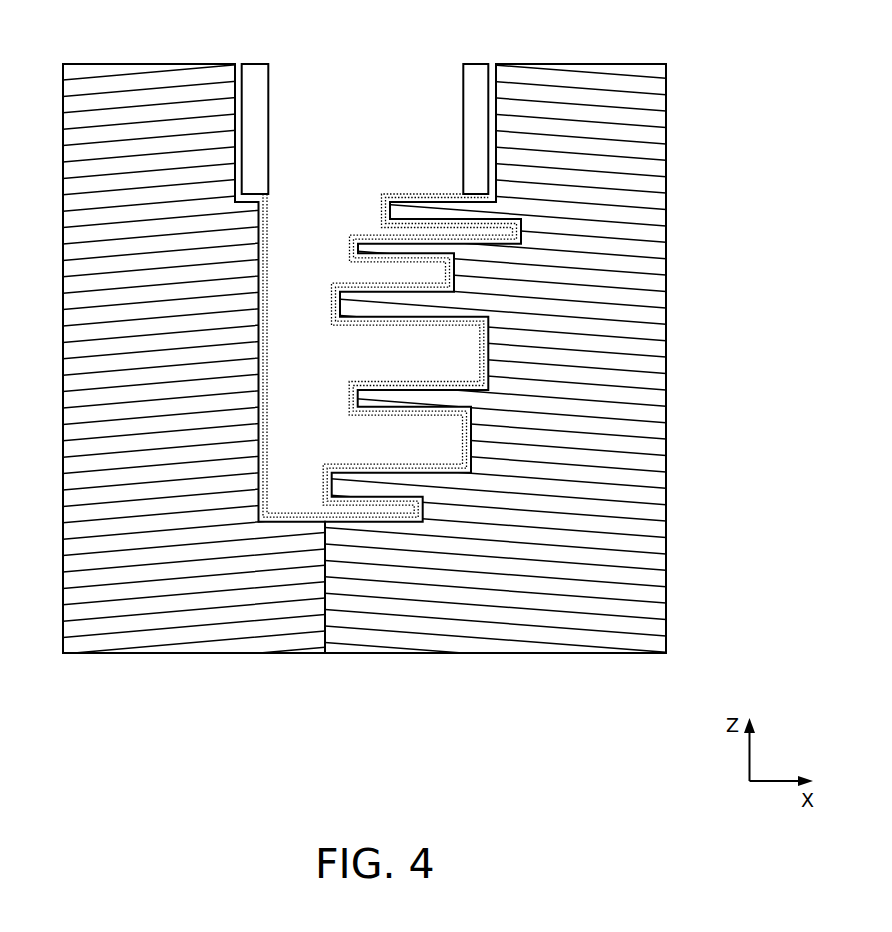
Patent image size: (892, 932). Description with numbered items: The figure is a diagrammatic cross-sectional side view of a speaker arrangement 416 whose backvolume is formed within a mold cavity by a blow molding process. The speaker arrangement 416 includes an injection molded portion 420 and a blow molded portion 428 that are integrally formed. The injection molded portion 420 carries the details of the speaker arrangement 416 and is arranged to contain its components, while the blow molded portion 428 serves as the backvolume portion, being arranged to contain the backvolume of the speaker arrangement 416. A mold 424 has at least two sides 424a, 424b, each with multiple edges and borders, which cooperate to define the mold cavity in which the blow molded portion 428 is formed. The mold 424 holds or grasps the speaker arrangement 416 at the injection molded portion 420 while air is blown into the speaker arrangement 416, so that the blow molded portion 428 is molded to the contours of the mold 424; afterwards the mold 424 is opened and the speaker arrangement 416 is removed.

The speaker arrangement 416 is at (258, 56).
The injection molded portion 420 is at (478, 73).
The mold 424 is at (364, 361).
The first side of mold 424a is at (288, 654).
The second side of mold 424b is at (512, 654).
The blow molded portion 428 is at (463, 357).